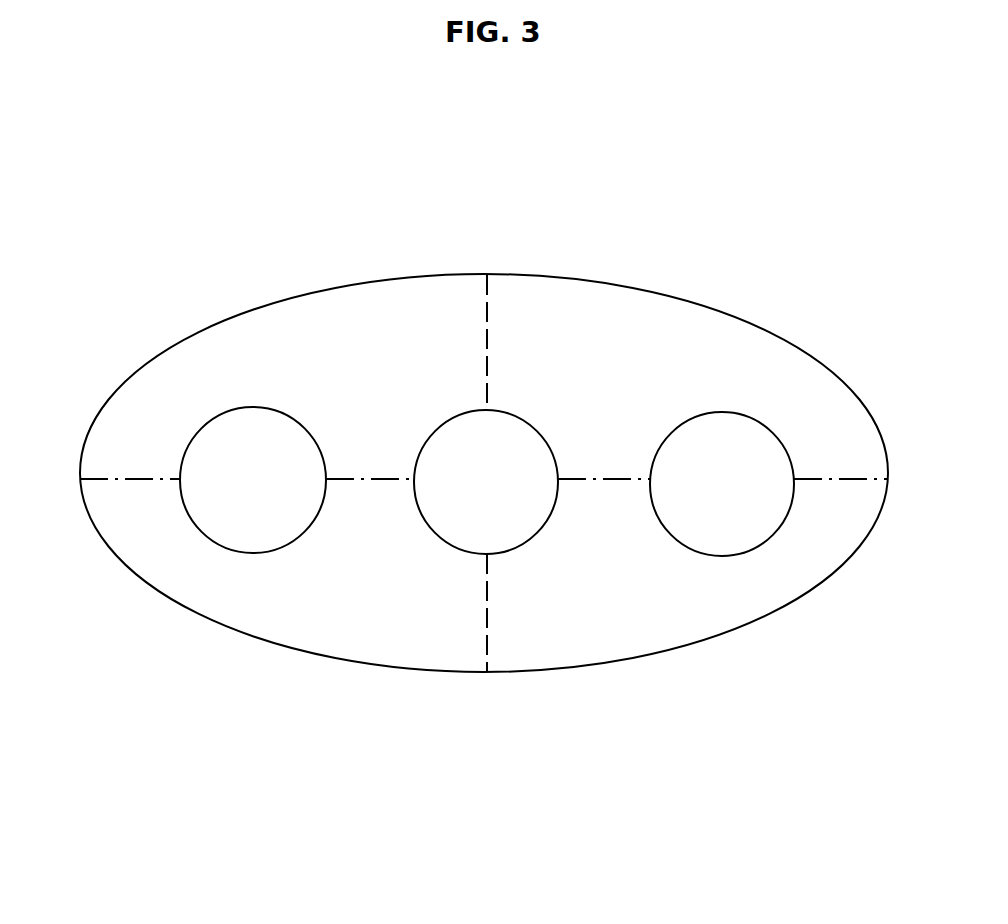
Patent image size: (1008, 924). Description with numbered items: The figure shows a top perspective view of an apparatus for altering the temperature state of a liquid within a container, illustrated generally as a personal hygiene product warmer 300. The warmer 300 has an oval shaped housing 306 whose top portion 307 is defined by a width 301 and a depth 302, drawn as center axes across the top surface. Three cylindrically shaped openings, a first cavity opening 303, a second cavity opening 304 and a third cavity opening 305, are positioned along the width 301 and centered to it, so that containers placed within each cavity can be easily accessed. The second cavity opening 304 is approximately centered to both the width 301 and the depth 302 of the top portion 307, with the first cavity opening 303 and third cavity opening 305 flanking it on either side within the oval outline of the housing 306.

The personal hygiene product warmer 300 is at (471, 473).
The width 301 is at (847, 483).
The depth 302 is at (478, 597).
The first cavity opening 303 is at (233, 405).
The second cavity opening 304 is at (481, 403).
The third cavity opening 305 is at (737, 413).
The oval shaped housing 306 is at (183, 598).
The top portion 307 is at (250, 594).